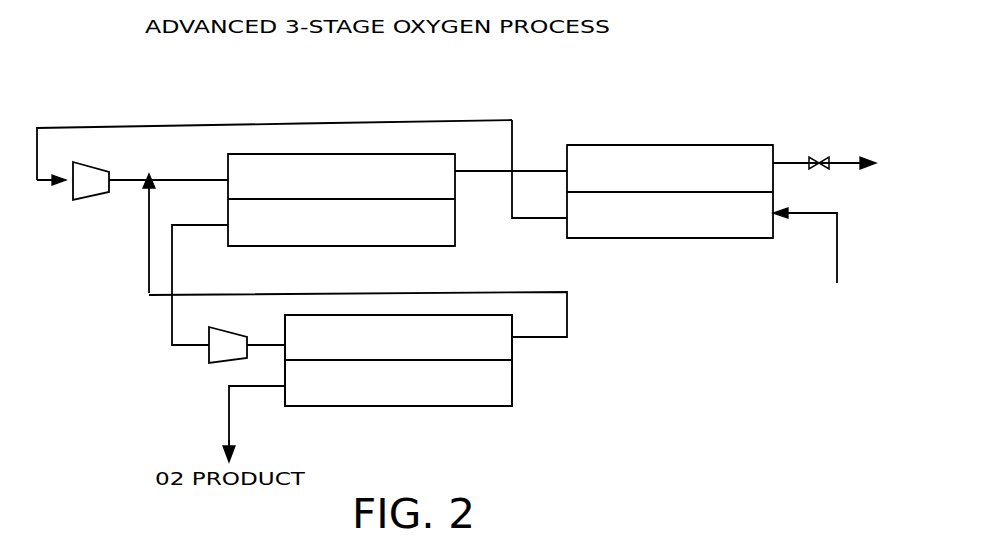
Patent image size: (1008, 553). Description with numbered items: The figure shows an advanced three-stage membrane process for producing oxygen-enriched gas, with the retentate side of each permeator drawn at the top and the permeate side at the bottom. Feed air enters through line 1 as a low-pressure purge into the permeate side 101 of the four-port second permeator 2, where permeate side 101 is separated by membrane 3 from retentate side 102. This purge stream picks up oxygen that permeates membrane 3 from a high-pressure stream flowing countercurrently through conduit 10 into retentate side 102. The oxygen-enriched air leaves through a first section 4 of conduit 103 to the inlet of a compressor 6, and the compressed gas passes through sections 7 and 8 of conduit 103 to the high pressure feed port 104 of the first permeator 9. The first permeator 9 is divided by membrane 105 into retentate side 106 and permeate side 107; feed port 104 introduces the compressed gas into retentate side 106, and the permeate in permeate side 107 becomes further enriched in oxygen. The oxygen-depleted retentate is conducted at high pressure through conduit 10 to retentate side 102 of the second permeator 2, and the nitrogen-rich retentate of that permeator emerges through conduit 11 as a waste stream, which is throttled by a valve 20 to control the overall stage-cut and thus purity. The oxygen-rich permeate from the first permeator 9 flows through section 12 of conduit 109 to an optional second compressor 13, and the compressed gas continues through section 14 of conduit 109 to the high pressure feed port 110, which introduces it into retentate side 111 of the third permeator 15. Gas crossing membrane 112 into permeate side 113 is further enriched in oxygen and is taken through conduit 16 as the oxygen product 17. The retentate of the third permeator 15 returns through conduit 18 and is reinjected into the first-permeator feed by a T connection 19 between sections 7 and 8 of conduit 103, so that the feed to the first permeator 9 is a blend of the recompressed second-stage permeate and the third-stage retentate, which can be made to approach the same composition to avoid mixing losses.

The line 1 is at (838, 252).
The 4-port permeator 2 is at (742, 132).
The membrane 3 is at (598, 194).
The first section of conduit 4 is at (488, 118).
The compressor 6 is at (88, 200).
The section of conduit 7 is at (121, 178).
The section of conduit 8 is at (190, 178).
The first permeator 9 is at (334, 124).
The conduit 10 is at (466, 173).
The conduit 11 is at (792, 163).
The section of conduit 12 is at (172, 262).
The second compressor 13 is at (210, 362).
The section of conduit 14 is at (275, 342).
The third permeator 15 is at (423, 430).
The conduit 16 is at (228, 432).
The oxygen product 17 is at (287, 464).
The conduit 18 is at (568, 306).
The T connection 19 is at (143, 188).
The valve 20 is at (836, 152).
The permeate side 101 is at (690, 229).
The retentate side 102 is at (598, 163).
The conduit 103 is at (263, 92).
The high pressure feed port 104 is at (222, 178).
The membrane 105 is at (397, 200).
The retentate side 106 is at (411, 156).
The permeate side 107 is at (415, 238).
The conduit 109 is at (132, 336).
The high pressure feed port 110 is at (280, 347).
The retentate side 111 is at (470, 325).
The membrane 112 is at (413, 361).
The permeate side 113 is at (380, 401).